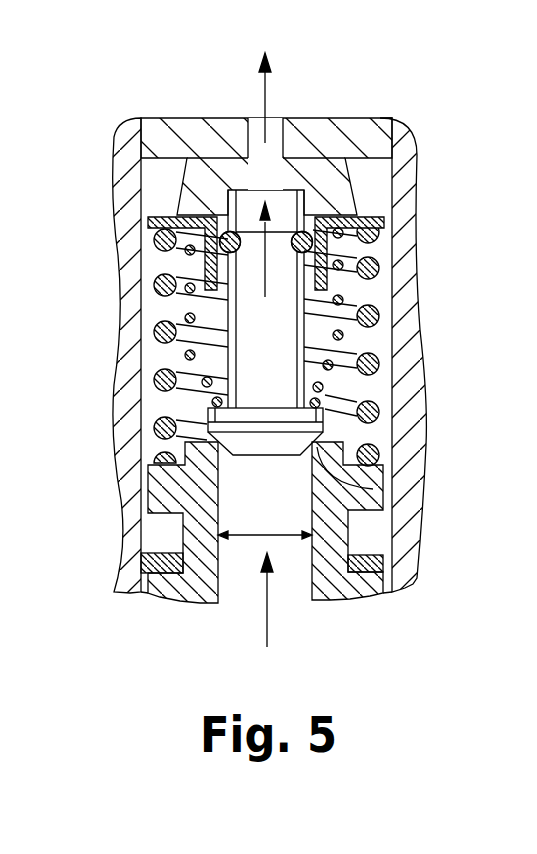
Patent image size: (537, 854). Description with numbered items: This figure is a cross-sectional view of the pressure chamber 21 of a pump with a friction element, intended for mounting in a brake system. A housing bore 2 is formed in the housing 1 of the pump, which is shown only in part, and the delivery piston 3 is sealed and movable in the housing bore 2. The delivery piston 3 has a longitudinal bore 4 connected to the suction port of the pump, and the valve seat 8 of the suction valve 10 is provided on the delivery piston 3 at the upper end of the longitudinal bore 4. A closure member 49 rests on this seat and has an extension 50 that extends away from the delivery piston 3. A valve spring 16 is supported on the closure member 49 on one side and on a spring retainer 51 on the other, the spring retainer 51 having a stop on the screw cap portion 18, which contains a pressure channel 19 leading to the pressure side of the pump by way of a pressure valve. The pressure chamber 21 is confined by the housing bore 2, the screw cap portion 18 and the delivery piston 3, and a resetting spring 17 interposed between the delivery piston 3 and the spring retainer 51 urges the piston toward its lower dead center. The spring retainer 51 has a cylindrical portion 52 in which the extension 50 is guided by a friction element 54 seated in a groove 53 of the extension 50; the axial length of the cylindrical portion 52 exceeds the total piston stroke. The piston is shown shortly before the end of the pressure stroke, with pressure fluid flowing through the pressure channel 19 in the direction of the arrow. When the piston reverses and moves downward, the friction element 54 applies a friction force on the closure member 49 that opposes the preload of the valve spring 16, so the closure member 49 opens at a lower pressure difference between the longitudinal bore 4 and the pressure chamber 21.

The housing 1 is at (127, 503).
The housing bore 2 is at (155, 354).
The delivery piston 3 is at (200, 577).
The longitudinal bore 4 is at (237, 575).
The valve seat 8 is at (373, 489).
The suction valve 10 is at (197, 422).
The valve spring 16 is at (388, 338).
The resetting spring 17 is at (155, 297).
The screw cap portion 18 is at (232, 135).
The pressure channel 19 is at (275, 137).
The pressure chamber 21 is at (357, 290).
The closure member 49 is at (324, 424).
The extension 50 is at (306, 385).
The spring retainer 51 is at (382, 220).
The cylindrical portion 52 is at (150, 260).
The groove 53 is at (274, 240).
The friction element 54 is at (392, 240).